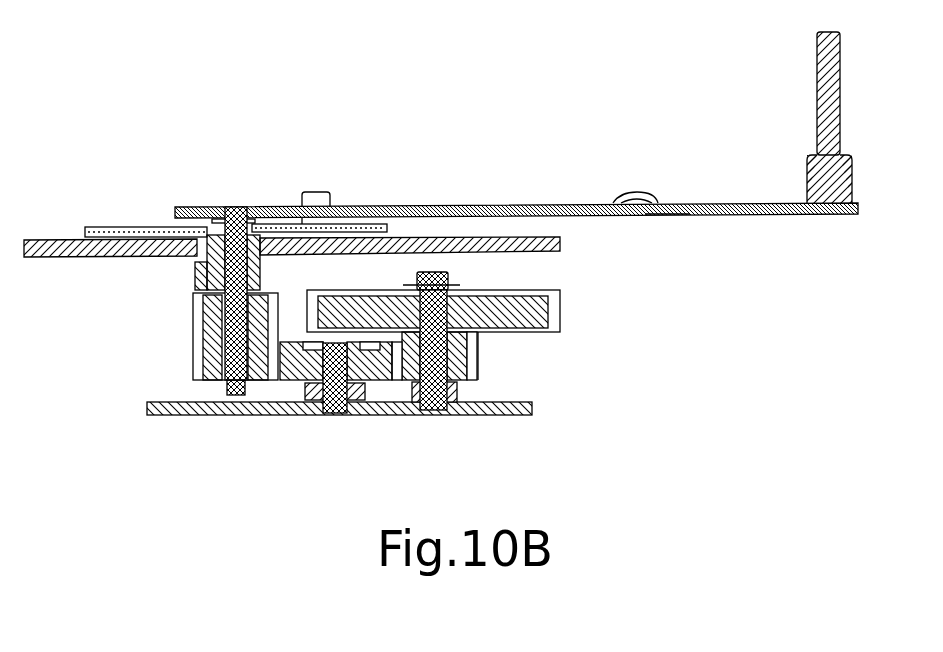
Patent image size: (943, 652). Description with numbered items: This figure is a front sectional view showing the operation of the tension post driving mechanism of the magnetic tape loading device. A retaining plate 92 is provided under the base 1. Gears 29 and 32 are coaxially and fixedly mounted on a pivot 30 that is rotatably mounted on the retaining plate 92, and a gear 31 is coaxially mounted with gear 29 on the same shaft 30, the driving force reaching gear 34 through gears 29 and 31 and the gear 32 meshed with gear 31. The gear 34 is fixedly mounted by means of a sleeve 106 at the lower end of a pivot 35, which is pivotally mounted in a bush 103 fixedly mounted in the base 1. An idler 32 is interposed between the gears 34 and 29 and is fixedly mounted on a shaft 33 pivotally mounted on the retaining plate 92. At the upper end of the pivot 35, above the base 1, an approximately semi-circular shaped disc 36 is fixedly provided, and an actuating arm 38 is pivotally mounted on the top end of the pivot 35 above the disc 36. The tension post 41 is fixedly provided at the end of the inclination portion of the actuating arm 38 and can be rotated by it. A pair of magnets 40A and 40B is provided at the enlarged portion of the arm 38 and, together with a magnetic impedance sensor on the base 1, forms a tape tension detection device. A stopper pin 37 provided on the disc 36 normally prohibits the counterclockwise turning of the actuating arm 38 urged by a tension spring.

The base 1 is at (72, 239).
The gear 29 is at (470, 362).
The pivot 30 is at (445, 417).
The gear 31 is at (513, 335).
The gear 32 is at (388, 414).
The shaft 33 is at (330, 418).
The gear 34 is at (195, 340).
The pivot 35 is at (228, 208).
The semi-circular shaped disc 36 is at (146, 226).
The stopper pin 37 is at (333, 195).
The actuating arm 38 is at (714, 203).
The magnet 40A is at (620, 193).
The magnet 40B is at (661, 217).
The tension post 41 is at (812, 158).
The retaining plate 92 is at (185, 415).
The bush 103 is at (195, 265).
The sleeve 106 is at (200, 300).